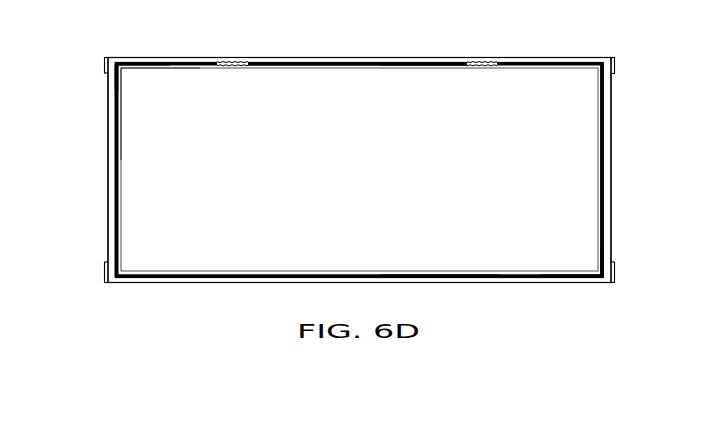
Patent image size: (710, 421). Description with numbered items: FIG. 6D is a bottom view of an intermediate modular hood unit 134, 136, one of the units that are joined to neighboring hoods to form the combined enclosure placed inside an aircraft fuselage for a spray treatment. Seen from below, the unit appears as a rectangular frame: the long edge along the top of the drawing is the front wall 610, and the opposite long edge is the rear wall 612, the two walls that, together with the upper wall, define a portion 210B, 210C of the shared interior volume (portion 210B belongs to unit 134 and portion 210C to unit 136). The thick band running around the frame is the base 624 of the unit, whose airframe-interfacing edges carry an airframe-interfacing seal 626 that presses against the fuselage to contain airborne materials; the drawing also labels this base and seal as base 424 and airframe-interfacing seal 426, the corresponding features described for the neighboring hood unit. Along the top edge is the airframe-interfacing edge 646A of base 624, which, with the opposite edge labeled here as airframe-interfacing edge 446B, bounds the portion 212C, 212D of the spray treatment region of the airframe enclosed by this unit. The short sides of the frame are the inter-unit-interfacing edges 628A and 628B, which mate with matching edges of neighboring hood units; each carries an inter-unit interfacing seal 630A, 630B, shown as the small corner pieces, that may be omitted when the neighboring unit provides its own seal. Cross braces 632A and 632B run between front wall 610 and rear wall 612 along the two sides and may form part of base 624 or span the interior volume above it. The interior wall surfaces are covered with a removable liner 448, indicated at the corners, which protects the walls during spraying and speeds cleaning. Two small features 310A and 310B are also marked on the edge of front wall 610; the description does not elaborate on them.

The intermediate modular hood unit 134 is at (314, 195).
The intermediate modular hood unit 136 is at (97, 303).
The portion of spray treatment region 212C is at (360, 170).
The panel / substrate 212D is at (395, 176).
The serrated tab / connection feature 310B is at (233, 72).
The serrated tab / connection feature 310A is at (484, 72).
The inter-unit interfacing seal 630B is at (106, 64).
The inter-unit interfacing seal 630A is at (613, 66).
The inter-unit-interfacing edge 628B is at (99, 76).
The inter-unit-interfacing edge 628A is at (619, 76).
The liner 448 is at (128, 77).
The portion of shared interior volume 210B is at (118, 114).
The portion of shared interior volume 210C is at (148, 130).
The cross brace 632B is at (115, 192).
The cross brace 632A is at (604, 232).
The base 424 is at (357, 96).
The airframe-interfacing seal 426 is at (329, 64).
The airframe-interfacing edge 646A is at (417, 63).
The front wall 610 is at (374, 49).
The base 624 is at (360, 247).
The airframe-interfacing seal 626 is at (267, 276).
The airframe-interfacing edge 446B is at (417, 276).
The rear wall 612 is at (216, 291).